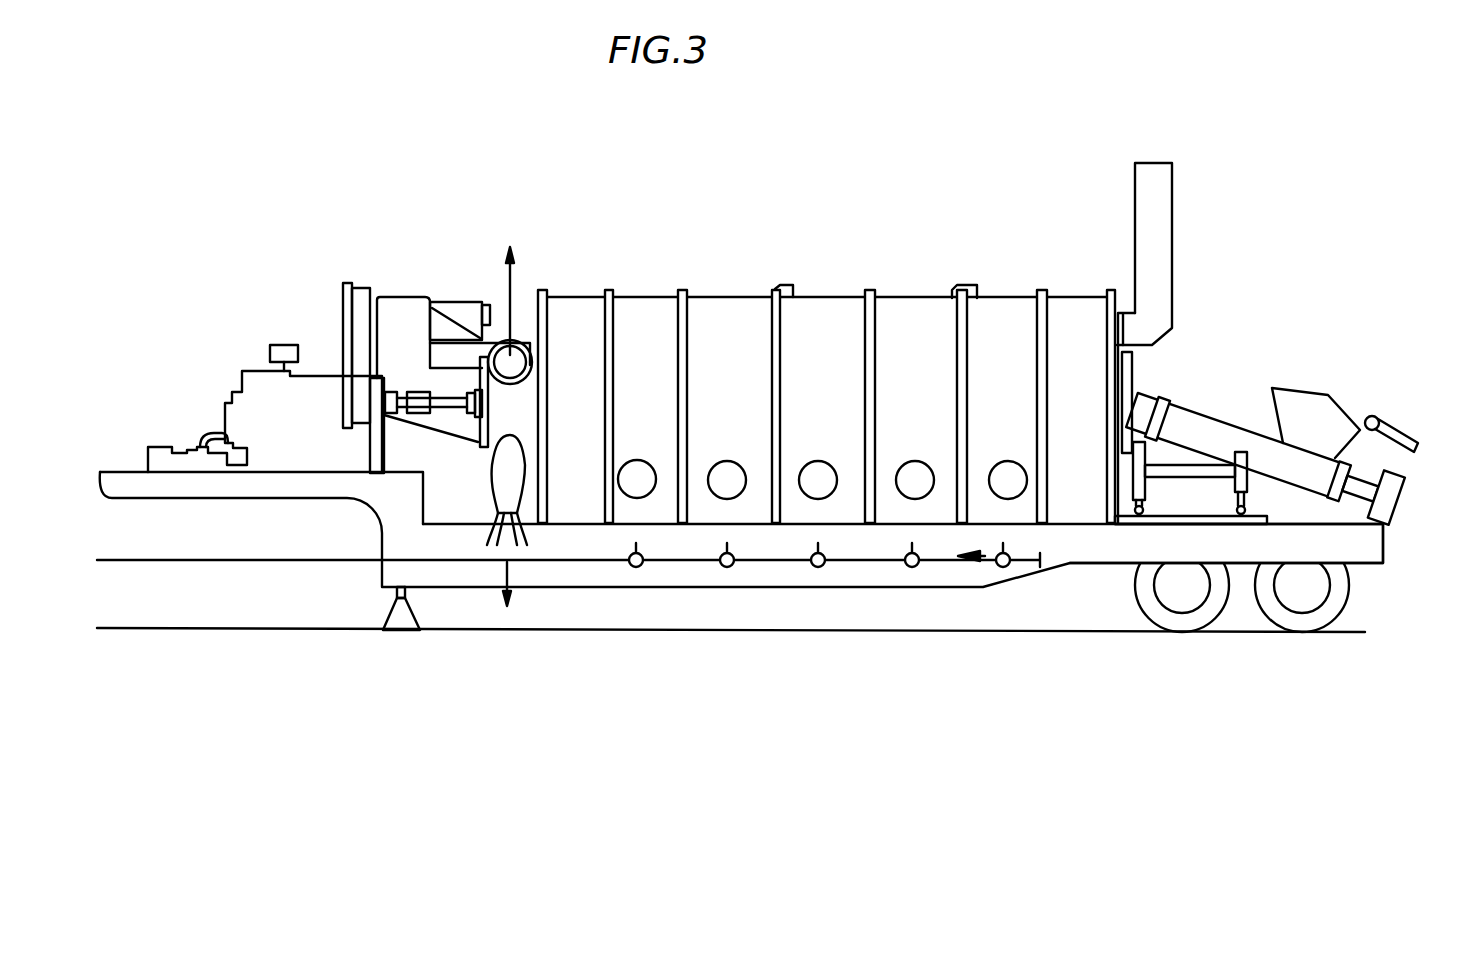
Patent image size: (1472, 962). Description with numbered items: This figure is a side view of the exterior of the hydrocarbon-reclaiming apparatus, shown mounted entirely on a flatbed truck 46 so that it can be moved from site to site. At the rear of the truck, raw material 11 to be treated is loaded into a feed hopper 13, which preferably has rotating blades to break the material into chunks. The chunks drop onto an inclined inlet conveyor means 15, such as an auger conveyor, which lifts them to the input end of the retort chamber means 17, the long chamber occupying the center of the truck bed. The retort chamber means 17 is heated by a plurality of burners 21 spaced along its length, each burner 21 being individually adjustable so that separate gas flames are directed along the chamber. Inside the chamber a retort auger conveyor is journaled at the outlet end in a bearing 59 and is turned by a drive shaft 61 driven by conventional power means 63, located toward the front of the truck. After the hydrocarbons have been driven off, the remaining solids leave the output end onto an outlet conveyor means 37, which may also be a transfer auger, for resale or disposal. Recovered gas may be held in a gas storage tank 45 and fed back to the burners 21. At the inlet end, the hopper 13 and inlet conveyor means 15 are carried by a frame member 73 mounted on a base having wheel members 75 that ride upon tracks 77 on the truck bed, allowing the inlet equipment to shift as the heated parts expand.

The raw material 11 is at (1413, 446).
The feed hopper 13 is at (1302, 400).
The inlet conveyor means 15 is at (1192, 418).
The retort chamber means 17 is at (1087, 388).
The burners 21 is at (637, 460).
The outlet conveyor means 37 is at (500, 485).
The gas storage tank 45 is at (512, 283).
The flatbed truck 46 is at (983, 558).
The bearing 59 is at (480, 402).
The drive shaft 61 is at (440, 395).
The power means 63 is at (300, 455).
The frame member 73 is at (1207, 473).
The wheel members 75 is at (1123, 524).
The tracks 77 is at (1180, 524).